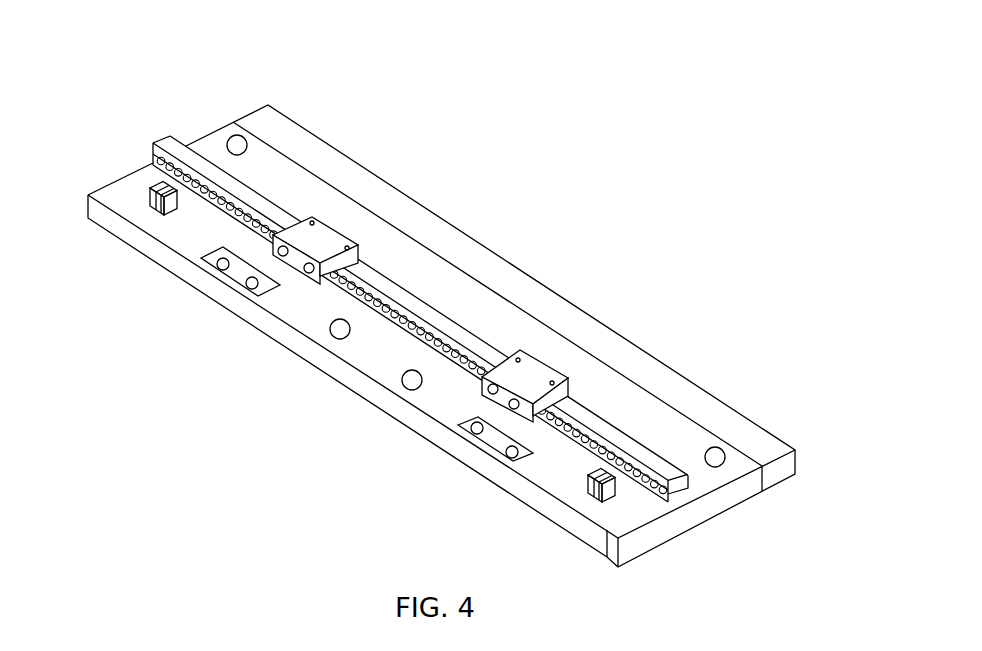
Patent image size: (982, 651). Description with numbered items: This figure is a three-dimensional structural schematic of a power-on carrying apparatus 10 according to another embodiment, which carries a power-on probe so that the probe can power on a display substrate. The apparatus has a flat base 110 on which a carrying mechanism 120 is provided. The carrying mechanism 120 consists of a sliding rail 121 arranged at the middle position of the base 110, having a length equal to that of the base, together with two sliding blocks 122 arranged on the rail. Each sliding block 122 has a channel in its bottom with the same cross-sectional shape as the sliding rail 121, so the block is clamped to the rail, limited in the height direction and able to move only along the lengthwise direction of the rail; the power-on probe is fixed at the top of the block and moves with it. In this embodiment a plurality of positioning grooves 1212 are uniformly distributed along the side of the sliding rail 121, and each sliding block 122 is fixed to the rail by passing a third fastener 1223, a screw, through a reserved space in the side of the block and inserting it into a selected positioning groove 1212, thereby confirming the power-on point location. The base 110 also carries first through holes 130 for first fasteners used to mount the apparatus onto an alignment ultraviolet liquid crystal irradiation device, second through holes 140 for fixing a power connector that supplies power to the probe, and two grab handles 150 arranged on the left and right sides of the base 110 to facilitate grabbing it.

The power-on carrying apparatus 10 is at (143, 52).
The base 110 is at (527, 268).
The carrying mechanism 120 is at (353, 208).
The sliding rail 121 is at (595, 413).
The positioning grooves 1212 is at (403, 330).
The sliding block 122 is at (548, 364).
The third fastener 1223 is at (483, 393).
The first through hole 130 is at (257, 135).
The second through hole 140 is at (507, 457).
The grab handle 150 is at (152, 210).